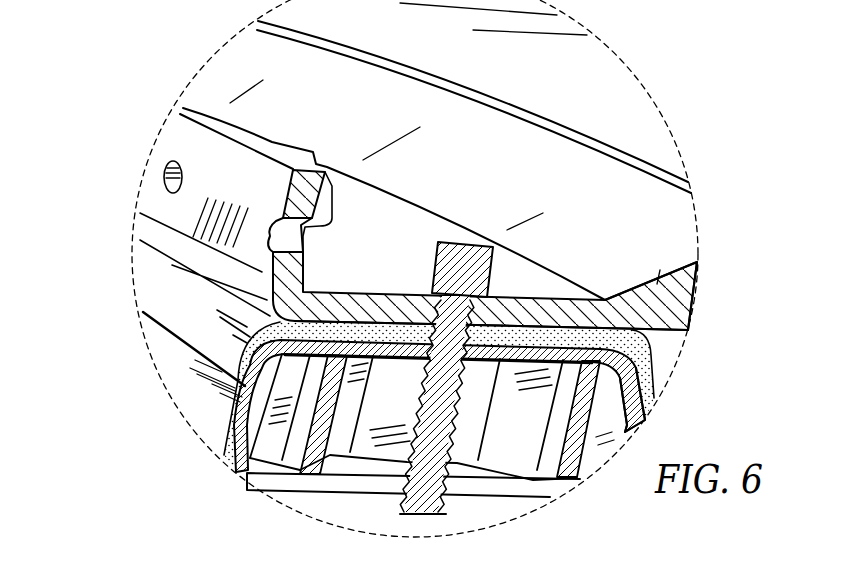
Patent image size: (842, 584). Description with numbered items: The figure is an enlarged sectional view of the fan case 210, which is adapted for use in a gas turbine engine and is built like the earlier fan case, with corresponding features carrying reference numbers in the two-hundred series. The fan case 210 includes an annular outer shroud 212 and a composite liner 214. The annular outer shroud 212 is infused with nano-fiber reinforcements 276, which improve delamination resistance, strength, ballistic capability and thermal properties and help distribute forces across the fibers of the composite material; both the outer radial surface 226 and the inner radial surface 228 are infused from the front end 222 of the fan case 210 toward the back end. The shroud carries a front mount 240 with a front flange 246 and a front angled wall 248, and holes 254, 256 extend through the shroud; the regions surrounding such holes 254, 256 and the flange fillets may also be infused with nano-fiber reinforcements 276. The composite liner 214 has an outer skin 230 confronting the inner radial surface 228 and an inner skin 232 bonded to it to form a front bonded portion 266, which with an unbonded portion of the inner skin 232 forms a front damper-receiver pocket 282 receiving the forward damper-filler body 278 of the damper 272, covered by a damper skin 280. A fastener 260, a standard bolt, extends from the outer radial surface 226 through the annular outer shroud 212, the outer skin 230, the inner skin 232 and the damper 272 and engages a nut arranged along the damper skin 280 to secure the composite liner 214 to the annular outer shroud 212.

The fan case 210 is at (677, 80).
The annular outer shroud 212 is at (725, 367).
The composite liner 214 is at (722, 280).
The front end 222 is at (137, 145).
The outer radial surface 226 is at (340, 290).
The inner radial surface 228 is at (357, 326).
The outer skin 230 is at (620, 330).
The inner skin 232 is at (638, 400).
The panel assembly 240 is at (283, 63).
The front flange 246 is at (248, 163).
The seal layer 248 is at (565, 315).
The hole 254 is at (164, 177).
The hole 256 is at (500, 316).
The fastener 260 is at (467, 258).
The frame wall 266 is at (247, 380).
The damper 272 is at (363, 440).
The nano-fiber reinforcements 276 is at (293, 173).
The support post 278 is at (563, 427).
The damper skin 280 is at (478, 483).
The support post 282 is at (273, 400).